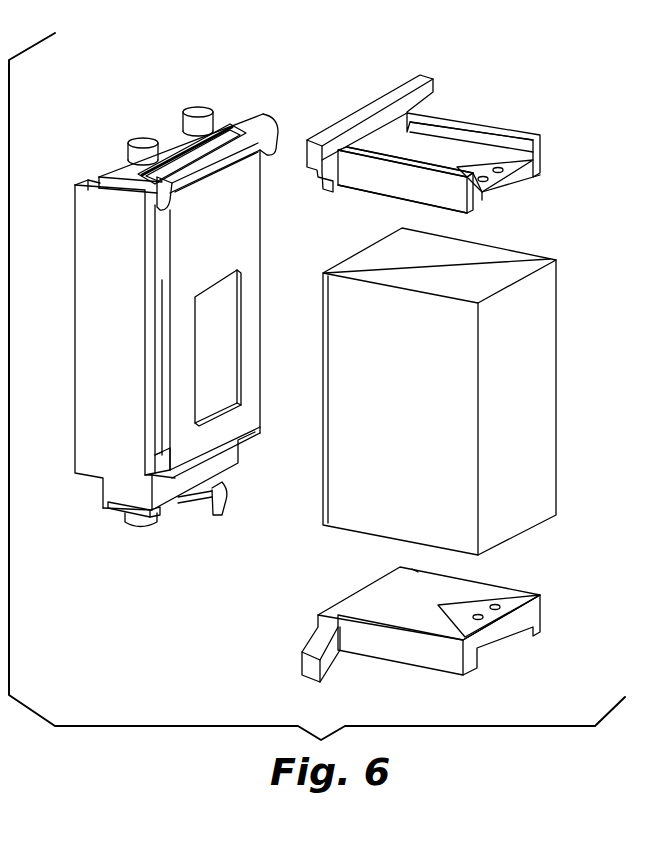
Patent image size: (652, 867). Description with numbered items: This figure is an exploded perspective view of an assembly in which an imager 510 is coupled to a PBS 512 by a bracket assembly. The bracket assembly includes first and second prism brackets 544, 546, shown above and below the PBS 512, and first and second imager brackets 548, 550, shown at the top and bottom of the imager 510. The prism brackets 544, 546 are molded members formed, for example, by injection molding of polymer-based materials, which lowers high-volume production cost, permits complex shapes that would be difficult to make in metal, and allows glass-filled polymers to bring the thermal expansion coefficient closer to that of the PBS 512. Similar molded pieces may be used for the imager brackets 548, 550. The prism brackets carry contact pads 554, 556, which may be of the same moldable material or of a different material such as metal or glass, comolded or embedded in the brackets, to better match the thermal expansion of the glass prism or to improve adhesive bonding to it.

The imager 510 is at (72, 458).
The PBS 512 is at (556, 346).
The first prism bracket 544 is at (492, 122).
The second prism bracket 546 is at (423, 672).
The first imager bracket 548 is at (225, 113).
The second imager bracket 550 is at (140, 518).
The contact pad 554 is at (450, 214).
The contact pad 556 is at (512, 598).